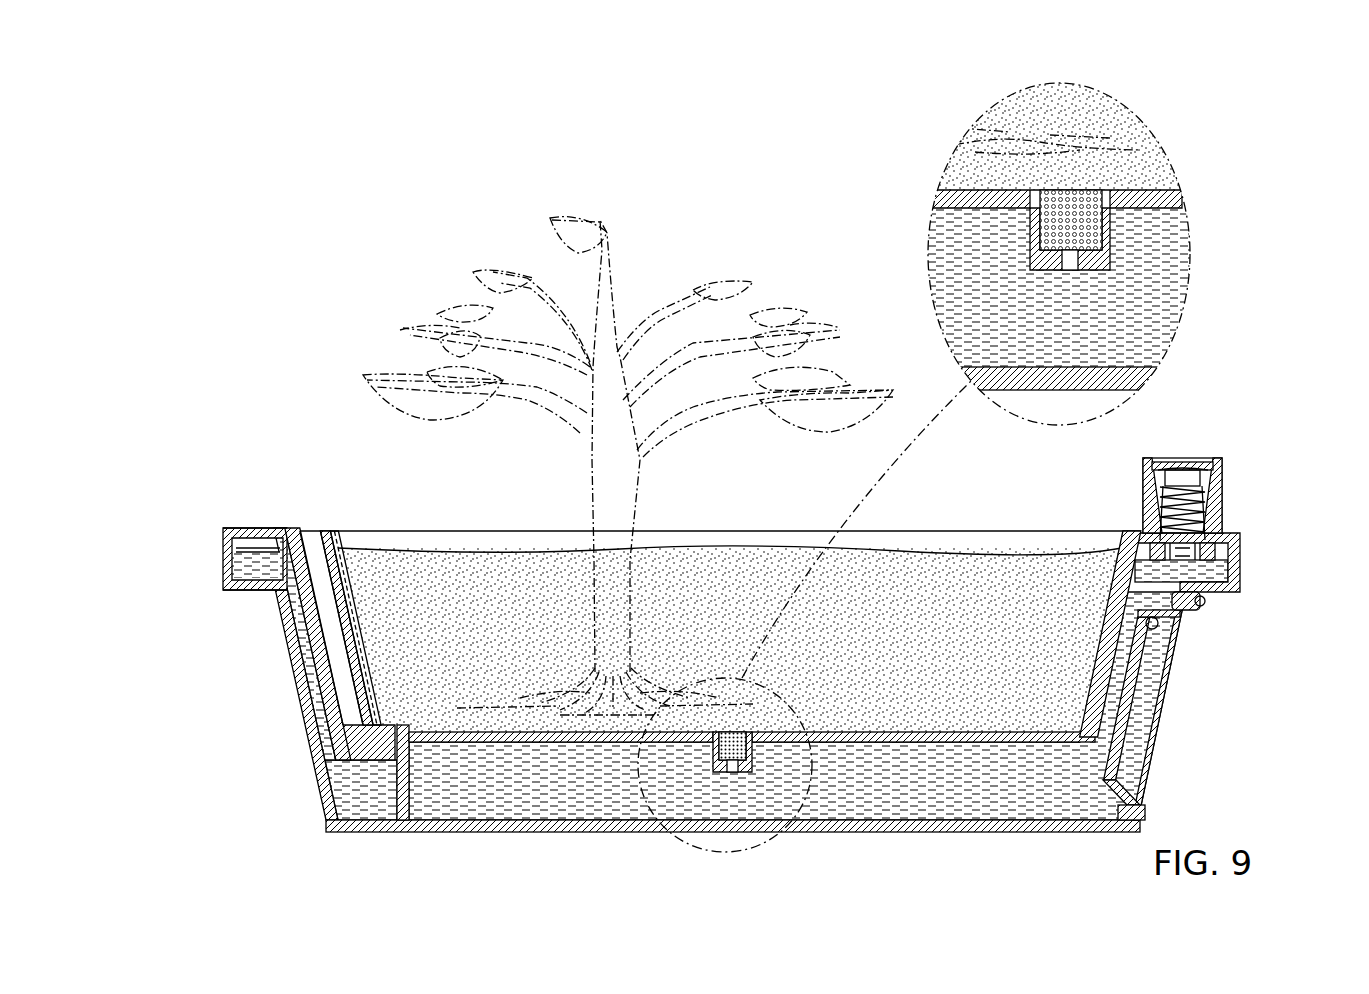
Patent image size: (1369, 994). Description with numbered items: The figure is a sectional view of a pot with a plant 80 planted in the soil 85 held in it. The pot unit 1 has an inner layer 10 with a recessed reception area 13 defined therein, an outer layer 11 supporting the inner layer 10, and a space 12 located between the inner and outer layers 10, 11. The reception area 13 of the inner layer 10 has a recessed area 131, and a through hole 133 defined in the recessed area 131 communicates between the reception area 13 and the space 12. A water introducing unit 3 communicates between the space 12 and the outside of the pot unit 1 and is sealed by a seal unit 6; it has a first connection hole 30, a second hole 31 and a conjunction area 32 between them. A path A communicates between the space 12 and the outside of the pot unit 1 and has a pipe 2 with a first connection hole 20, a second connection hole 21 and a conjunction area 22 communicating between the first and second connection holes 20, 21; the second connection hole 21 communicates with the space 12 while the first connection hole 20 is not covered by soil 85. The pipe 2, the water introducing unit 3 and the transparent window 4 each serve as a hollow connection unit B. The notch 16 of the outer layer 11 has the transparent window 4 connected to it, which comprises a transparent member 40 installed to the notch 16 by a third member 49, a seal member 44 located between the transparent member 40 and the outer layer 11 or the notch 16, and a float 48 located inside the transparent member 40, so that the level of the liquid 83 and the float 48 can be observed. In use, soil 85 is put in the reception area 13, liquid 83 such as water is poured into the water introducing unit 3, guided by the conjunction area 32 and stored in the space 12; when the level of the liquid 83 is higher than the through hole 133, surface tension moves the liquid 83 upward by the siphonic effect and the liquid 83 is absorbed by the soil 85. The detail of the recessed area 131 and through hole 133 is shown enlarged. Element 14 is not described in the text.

The pot unit 1 is at (188, 475).
The inner layer 10 is at (240, 527).
The outer layer 11 is at (223, 584).
The space 12 is at (243, 554).
The reception area 13 is at (438, 536).
The recessed area 131 is at (713, 742).
The through hole 133 is at (731, 770).
The support block 14 is at (353, 757).
The notch 16 is at (1090, 678).
The pipe 2 is at (215, 622).
The first connection hole 20 is at (278, 588).
The second connection hole 21 is at (330, 718).
The conjunction area 22 is at (327, 643).
The water introducing unit 3 is at (1227, 455).
The first connection hole 30 is at (1185, 490).
The second hole 31 is at (1185, 520).
The conjunction area 32 is at (1218, 517).
The transparent window 4 is at (1204, 706).
The transparent member 40 is at (1185, 692).
The seal member 44 is at (1204, 629).
The float 48 is at (1150, 650).
The third member 49 is at (1198, 603).
The seal unit 6 is at (1170, 458).
The plant 80 is at (452, 320).
The liquid 83 is at (360, 786).
The soil 85 is at (381, 555).
The path A is at (172, 660).
The connection unit B is at (283, 523).